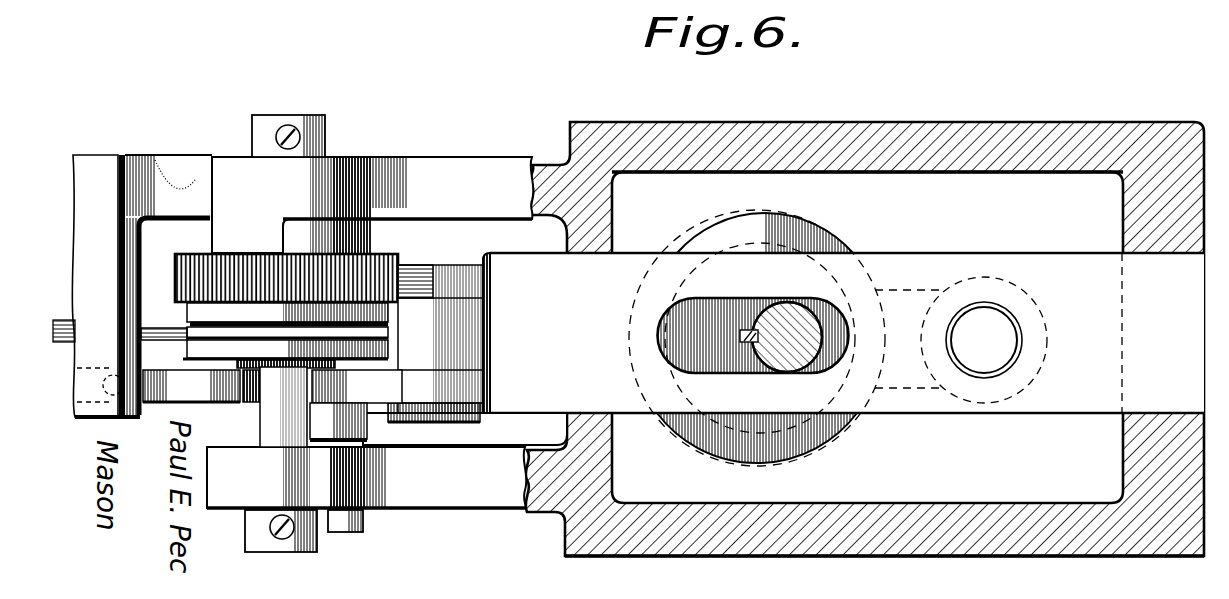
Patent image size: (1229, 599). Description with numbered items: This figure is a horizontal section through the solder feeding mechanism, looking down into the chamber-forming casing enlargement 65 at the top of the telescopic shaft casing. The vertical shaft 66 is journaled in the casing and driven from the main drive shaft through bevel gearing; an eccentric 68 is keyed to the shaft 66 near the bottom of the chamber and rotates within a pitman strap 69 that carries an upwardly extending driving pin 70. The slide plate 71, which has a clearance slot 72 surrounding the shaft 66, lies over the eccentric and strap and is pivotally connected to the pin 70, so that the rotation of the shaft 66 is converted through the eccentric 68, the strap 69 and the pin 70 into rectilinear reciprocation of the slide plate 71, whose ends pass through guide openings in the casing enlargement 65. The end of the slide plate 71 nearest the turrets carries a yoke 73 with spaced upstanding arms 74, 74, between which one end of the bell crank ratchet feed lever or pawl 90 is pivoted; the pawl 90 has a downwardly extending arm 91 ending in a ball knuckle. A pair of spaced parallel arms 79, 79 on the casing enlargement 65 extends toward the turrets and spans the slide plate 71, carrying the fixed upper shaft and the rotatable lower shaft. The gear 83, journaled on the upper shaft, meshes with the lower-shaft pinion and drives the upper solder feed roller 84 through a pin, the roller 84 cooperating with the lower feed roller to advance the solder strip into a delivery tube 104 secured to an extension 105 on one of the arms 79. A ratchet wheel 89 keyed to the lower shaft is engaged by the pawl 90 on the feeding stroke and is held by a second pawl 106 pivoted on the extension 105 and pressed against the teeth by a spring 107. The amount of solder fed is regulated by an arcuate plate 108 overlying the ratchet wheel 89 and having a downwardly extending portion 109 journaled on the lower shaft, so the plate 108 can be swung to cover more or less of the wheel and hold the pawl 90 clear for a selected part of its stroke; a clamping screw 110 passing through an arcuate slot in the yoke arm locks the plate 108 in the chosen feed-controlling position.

The casing enlargement 65 is at (865, 339).
The shaft 66 is at (795, 322).
The eccentric 68 is at (707, 313).
The pitman strap 69 is at (787, 440).
The driving pin 70 is at (1000, 327).
The slide plate 71 is at (847, 333).
The clearance slot 72 is at (766, 287).
The yoke 73 is at (490, 294).
The upstanding arms 74 is at (442, 278).
The arms 79 is at (370, 332).
The gear 83 is at (233, 265).
The upper solder feed roller 84 is at (390, 317).
The ratchet wheel 89 is at (253, 397).
The ratchet feed lever or pawl 90 is at (319, 381).
The downwardly extending arm 91 is at (440, 344).
The delivery tube 104 is at (152, 325).
The extension 105 is at (92, 163).
The pawl 106 is at (157, 397).
The spring 107 is at (148, 362).
The arcuate plate 108 is at (318, 427).
The downwardly extending portion 109 is at (363, 442).
The clamping screw 110 is at (338, 532).